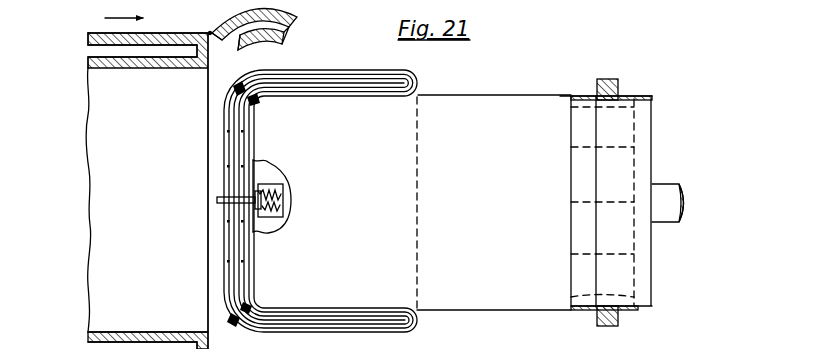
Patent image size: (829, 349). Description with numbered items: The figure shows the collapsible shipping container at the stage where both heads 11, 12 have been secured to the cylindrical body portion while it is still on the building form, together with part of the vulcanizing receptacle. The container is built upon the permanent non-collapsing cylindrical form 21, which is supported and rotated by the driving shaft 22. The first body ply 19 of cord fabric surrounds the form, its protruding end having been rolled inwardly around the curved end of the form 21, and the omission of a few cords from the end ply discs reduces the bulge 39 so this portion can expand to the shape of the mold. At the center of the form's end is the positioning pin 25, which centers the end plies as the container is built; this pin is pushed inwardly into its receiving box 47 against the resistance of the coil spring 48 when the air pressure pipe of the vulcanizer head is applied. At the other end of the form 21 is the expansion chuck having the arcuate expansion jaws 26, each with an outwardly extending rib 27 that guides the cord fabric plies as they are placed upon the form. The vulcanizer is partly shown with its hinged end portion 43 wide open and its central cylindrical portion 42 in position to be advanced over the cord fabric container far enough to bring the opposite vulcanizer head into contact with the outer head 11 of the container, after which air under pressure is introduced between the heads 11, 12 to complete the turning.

The head 11 is at (222, 251).
The head 12 is at (258, 251).
The first ply 19 is at (334, 70).
The cylindrical form 21 is at (494, 202).
The driving shaft 22 is at (677, 184).
The positioning pin 25 is at (217, 200).
The expansion jaws 26 is at (622, 98).
The rib 27 is at (614, 79).
The bulge 39 is at (268, 103).
The central cylindrical portion 42 is at (100, 70).
The hinged end portion 43 is at (302, 13).
The receiving box 47 is at (280, 168).
The coil spring 48 is at (283, 191).